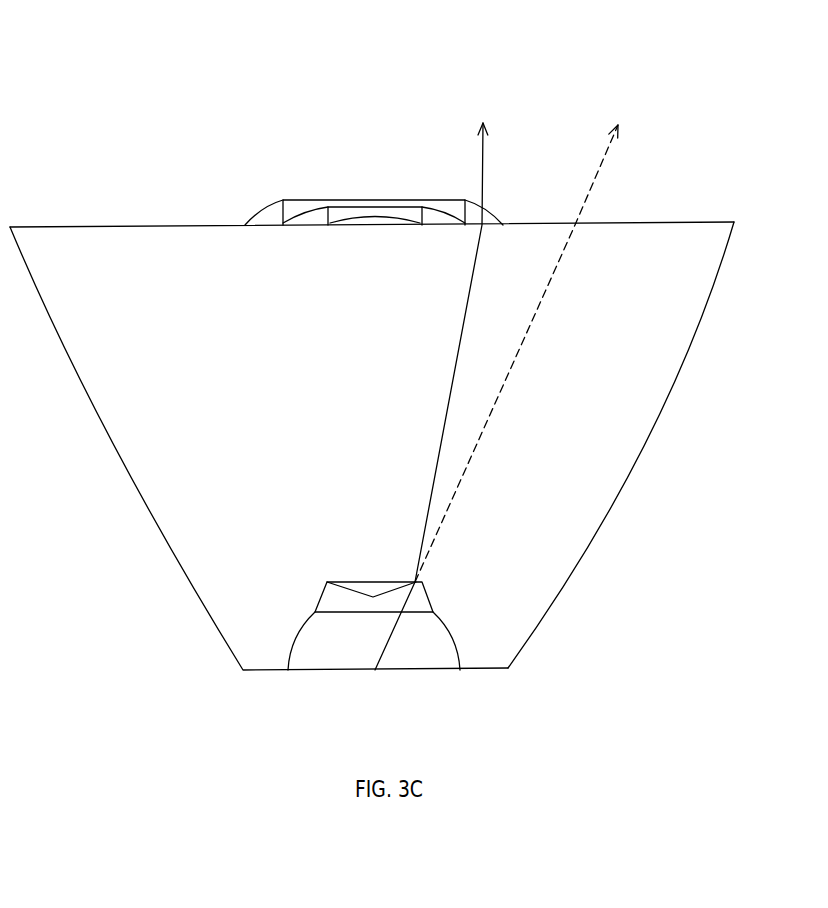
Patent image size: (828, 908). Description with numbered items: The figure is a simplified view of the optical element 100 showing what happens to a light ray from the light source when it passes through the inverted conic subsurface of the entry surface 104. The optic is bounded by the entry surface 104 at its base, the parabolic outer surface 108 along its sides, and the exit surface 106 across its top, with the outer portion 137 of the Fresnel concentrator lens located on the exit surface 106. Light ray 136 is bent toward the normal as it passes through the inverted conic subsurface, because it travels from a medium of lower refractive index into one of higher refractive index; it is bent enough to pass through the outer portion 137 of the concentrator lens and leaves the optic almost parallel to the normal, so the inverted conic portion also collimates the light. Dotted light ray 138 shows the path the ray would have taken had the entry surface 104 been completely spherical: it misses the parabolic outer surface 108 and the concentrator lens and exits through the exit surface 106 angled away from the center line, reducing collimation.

The optical element 100 is at (372, 337).
The entry surface 104 is at (255, 645).
The exit surface 106 is at (157, 226).
The parabolic outer surface 108 is at (618, 501).
The light ray 136 is at (460, 332).
The outer portion of the Fresnel concentrator lens 137 is at (302, 198).
The dotted light ray 138 is at (512, 363).